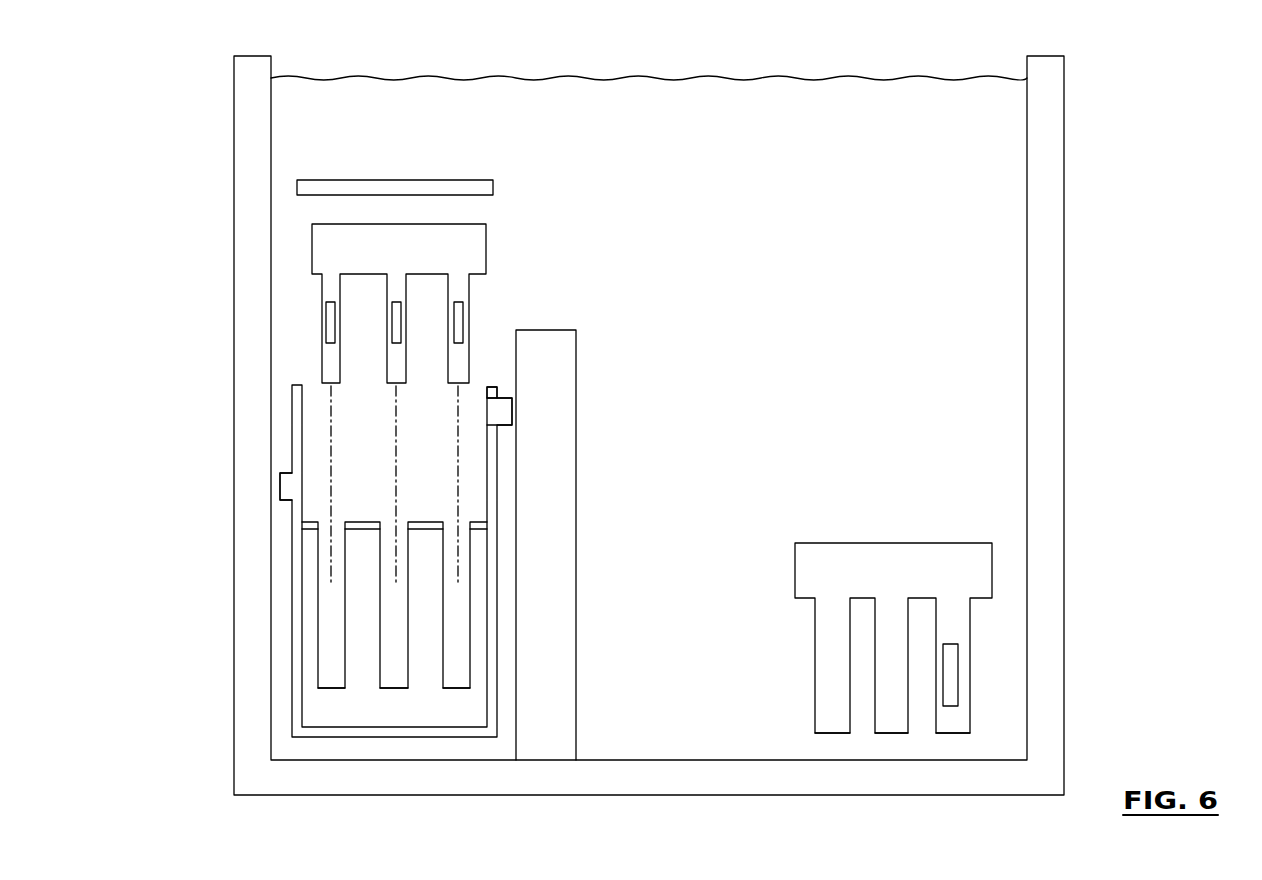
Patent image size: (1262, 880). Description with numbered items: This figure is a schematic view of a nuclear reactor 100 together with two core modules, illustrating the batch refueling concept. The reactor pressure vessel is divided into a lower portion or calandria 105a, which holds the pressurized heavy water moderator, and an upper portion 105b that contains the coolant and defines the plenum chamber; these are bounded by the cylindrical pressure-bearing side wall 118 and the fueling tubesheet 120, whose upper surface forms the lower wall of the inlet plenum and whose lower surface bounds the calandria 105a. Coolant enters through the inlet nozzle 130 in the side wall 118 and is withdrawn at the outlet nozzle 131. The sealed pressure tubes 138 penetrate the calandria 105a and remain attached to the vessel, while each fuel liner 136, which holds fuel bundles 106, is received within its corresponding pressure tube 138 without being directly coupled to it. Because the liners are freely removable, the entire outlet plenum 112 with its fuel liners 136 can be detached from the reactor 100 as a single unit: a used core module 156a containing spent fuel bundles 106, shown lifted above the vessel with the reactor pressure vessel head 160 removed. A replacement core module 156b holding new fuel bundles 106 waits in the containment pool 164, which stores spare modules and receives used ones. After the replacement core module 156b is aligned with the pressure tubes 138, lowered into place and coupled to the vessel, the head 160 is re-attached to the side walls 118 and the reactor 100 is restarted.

The nuclear reactor 100 is at (665, 426).
The calandria 105a is at (286, 657).
The upper portion 105b is at (288, 445).
The fuel bundle 106 is at (468, 337).
The outlet plenum 112 is at (652, 466).
The side wall 118 is at (390, 576).
The fueling tubesheet 120 is at (308, 653).
The inlet nozzle 130 is at (283, 487).
The outlet nozzle 131 is at (498, 410).
The fuel liner 136 is at (406, 304).
The pressure tube 138 is at (452, 670).
The used core module 156a is at (488, 242).
The replacement core module 156b is at (884, 522).
The reactor pressure vessel head 160 is at (427, 187).
The containment pool 164 is at (1068, 472).